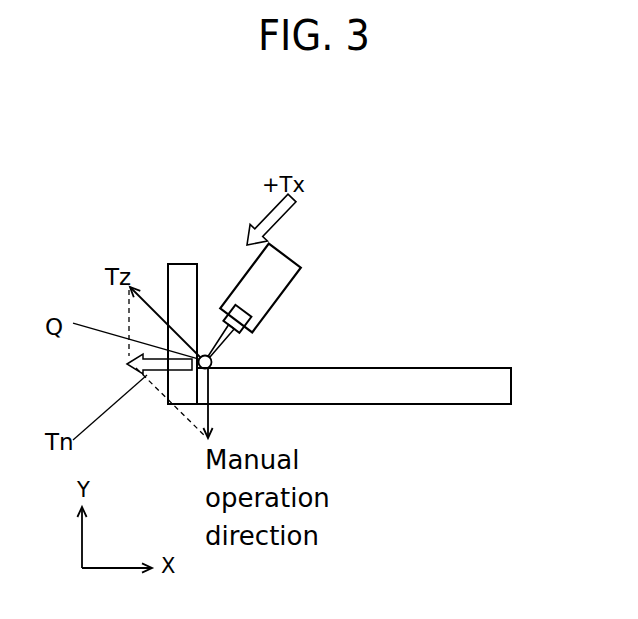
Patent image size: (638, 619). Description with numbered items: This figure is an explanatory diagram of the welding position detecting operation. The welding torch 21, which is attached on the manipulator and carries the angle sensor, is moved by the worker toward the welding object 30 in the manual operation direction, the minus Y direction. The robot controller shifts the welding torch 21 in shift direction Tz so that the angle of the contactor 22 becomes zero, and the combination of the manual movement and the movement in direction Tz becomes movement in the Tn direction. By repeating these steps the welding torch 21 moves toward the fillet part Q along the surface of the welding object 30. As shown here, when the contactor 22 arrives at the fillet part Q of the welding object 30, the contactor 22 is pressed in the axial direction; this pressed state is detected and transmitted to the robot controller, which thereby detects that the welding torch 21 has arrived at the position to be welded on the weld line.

The welding torch 21 is at (291, 257).
The contactor 22 is at (241, 337).
The welding object 30 is at (432, 406).